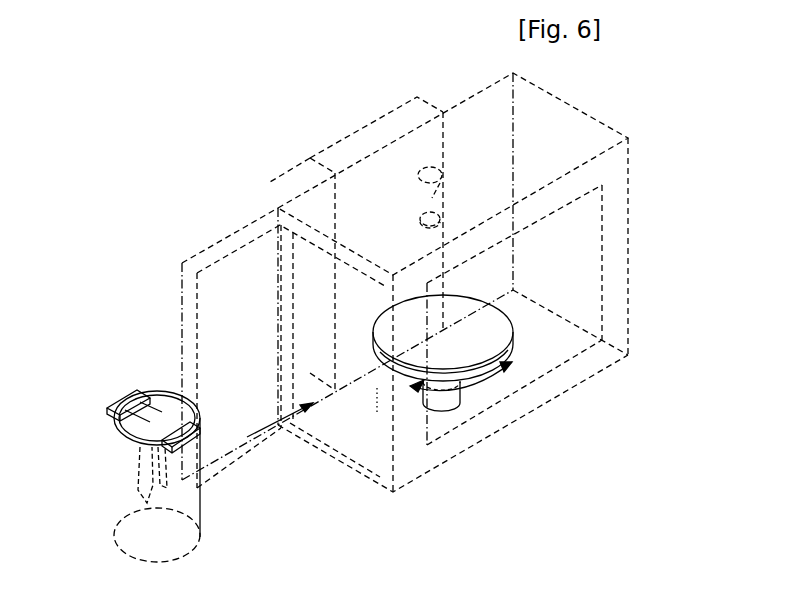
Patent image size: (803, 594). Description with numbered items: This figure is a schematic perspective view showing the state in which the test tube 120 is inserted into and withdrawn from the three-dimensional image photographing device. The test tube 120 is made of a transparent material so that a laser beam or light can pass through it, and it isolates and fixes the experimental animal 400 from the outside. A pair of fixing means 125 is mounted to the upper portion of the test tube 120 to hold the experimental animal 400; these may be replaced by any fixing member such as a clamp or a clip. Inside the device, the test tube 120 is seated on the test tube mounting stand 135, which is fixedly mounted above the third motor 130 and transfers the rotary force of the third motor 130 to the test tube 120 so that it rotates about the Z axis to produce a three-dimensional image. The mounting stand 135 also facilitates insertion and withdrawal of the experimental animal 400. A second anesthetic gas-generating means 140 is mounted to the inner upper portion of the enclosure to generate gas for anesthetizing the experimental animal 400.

The test tube 120 is at (177, 392).
The fixing means 125 is at (121, 392).
The third motor 130 is at (460, 405).
The test tube mounting stand 135 is at (514, 333).
The second anesthetic gas-generating means 140 is at (442, 177).
The experimental animal 400 is at (135, 471).